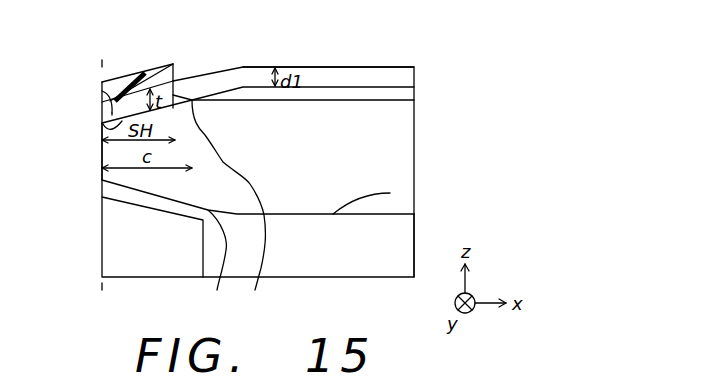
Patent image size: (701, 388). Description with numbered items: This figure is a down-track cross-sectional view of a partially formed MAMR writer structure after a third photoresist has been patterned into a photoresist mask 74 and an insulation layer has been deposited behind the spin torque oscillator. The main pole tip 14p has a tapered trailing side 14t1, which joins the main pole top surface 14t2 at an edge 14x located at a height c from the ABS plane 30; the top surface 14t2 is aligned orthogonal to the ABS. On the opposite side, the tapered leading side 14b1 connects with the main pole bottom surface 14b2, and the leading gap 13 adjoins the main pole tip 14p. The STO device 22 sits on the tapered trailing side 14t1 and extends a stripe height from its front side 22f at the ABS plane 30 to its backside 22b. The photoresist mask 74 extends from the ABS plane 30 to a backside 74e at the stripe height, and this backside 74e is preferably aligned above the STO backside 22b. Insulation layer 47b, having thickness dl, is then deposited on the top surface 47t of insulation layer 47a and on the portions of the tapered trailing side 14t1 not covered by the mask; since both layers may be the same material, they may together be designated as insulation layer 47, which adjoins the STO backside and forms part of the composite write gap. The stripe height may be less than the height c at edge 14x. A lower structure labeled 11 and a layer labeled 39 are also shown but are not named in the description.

The substrate 11 is at (113, 237).
The leading gap 13 is at (113, 190).
The main pole tip 14p is at (102, 156).
The main pole tapered trailing side 14t1 is at (102, 123).
The main pole top surface 14t2 is at (353, 102).
The main pole leading side 14b1 is at (209, 262).
The main pole bottom surface 14b2 is at (390, 193).
The edge 14x is at (233, 207).
The STO device 22 is at (107, 93).
The STO backside 22b is at (190, 95).
The STO front side 22f is at (112, 115).
The ABS plane 30 is at (101, 174).
The nonmagnetic layer 39 is at (414, 230).
The insulation layer 47 is at (312, 76).
The insulation layer 47a is at (405, 93).
The insulation layer 47b is at (405, 72).
The top surface of insulation layer 47t is at (372, 85).
The photoresist mask 74 is at (135, 73).
The photoresist mask backside 74e is at (175, 66).